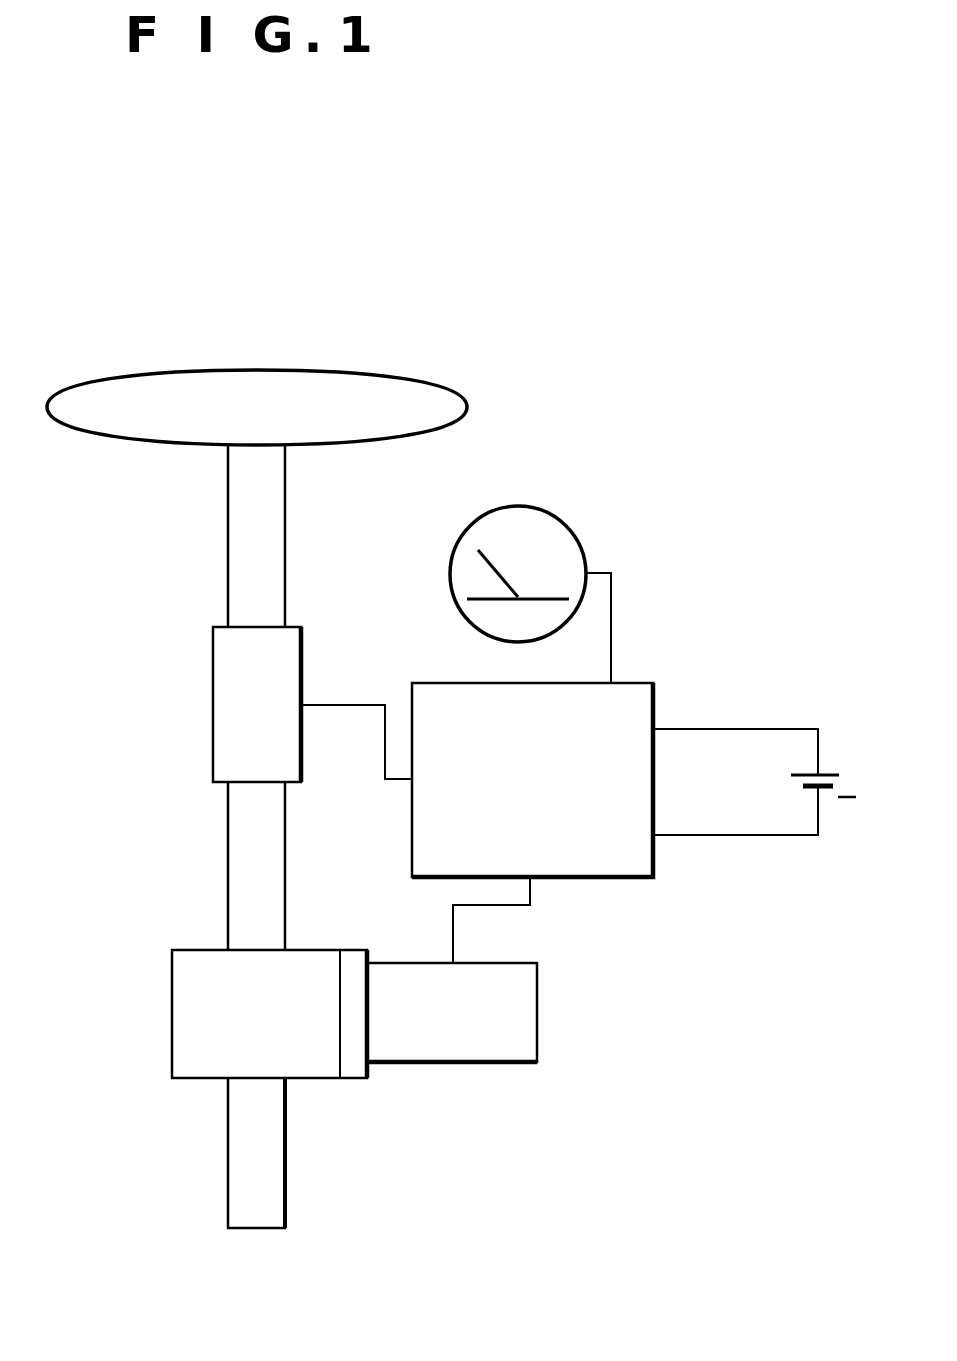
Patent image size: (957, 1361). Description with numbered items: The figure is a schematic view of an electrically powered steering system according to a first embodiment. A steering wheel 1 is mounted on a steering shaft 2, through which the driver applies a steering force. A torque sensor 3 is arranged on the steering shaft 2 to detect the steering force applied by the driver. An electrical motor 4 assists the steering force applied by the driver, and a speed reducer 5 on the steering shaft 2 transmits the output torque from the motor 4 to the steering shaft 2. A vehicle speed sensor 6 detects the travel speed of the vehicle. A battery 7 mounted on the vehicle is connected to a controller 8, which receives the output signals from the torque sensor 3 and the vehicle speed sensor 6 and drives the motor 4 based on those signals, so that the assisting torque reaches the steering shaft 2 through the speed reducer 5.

The steering wheel 1 is at (398, 393).
The steering shaft 2 is at (237, 588).
The torque sensor 3 is at (237, 730).
The electrical motor 4 is at (507, 1003).
The speed reducer 5 is at (195, 988).
The vehicle speed sensor 6 is at (527, 542).
The battery 7 is at (826, 765).
The controller 8 is at (620, 720).